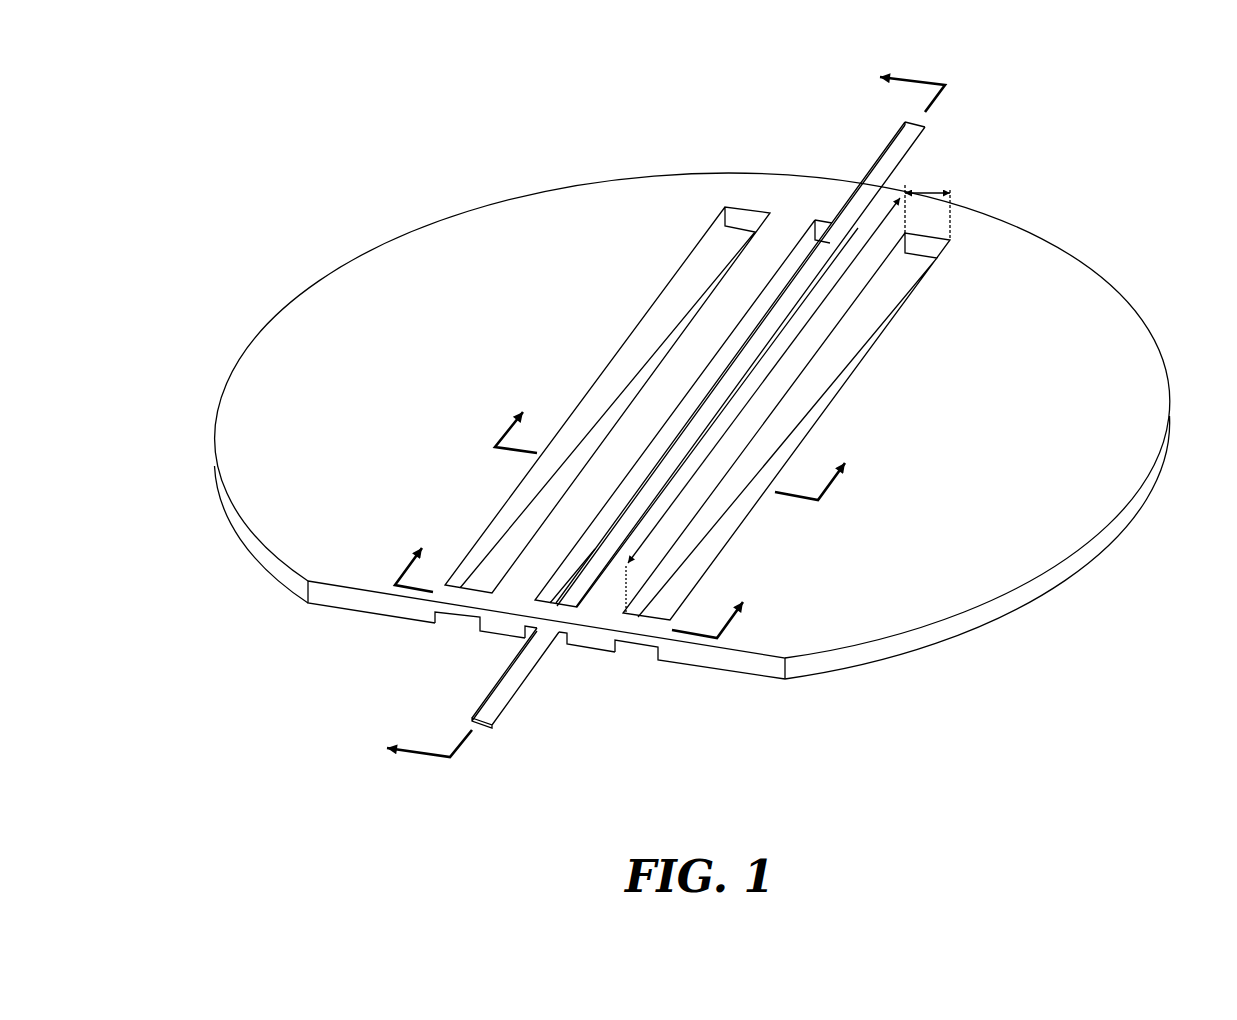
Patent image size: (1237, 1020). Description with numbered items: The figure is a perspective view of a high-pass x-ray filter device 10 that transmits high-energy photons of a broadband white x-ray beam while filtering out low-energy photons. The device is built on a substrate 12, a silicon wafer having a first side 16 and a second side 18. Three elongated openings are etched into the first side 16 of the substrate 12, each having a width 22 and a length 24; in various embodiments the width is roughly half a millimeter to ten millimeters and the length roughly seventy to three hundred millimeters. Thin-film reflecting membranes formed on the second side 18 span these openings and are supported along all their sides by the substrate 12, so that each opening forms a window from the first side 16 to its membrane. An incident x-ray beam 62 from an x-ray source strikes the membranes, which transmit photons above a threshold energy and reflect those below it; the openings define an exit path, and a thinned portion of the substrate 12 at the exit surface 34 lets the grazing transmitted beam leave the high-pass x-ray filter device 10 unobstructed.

The high-pass x-ray filter device 10 is at (275, 102).
The substrate 12 is at (703, 444).
The first side 16 is at (990, 623).
The second side 18 is at (1130, 342).
The width 22 is at (927, 191).
The length 24 is at (880, 222).
The exit surface 34 is at (502, 628).
The incident x-ray beam 62 is at (907, 128).